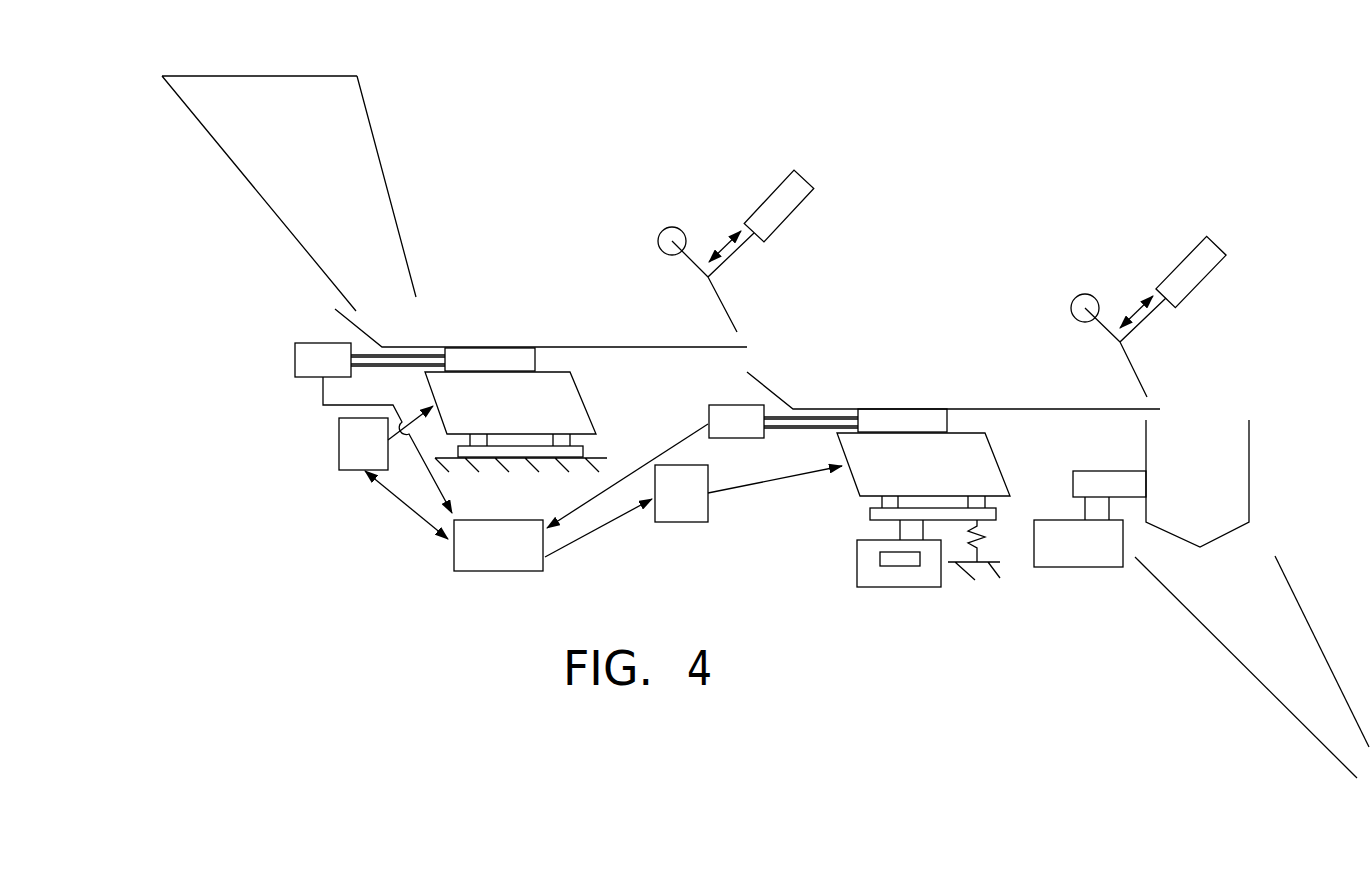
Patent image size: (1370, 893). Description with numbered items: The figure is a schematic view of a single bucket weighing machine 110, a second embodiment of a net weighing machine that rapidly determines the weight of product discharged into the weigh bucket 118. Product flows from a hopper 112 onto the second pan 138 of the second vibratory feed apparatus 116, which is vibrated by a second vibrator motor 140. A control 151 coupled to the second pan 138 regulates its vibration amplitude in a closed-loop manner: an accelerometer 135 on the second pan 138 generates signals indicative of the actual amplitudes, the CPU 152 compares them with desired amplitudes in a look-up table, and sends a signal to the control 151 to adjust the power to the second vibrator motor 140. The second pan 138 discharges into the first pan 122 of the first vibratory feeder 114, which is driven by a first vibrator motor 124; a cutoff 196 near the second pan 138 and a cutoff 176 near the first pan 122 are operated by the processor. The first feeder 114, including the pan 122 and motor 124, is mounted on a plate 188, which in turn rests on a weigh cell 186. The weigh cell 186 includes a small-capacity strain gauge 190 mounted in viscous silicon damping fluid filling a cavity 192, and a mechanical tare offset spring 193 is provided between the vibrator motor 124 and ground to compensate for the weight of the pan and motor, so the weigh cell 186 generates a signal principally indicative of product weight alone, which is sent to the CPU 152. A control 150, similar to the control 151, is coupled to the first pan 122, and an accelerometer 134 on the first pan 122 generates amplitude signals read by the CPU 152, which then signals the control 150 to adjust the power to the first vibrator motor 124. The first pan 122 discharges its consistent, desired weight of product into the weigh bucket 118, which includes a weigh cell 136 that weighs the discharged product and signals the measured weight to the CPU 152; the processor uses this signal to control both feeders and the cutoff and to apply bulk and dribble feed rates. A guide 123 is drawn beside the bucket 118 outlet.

The single bucket weighing machine 110 is at (892, 221).
The hopper 112 is at (372, 128).
The first vibratory feeder 114 is at (902, 367).
The second vibratory feed apparatus 116 is at (528, 311).
The weigh bucket 118 is at (1250, 460).
The first pan 122 is at (1015, 411).
The container guide 123 is at (1298, 595).
The first vibrator motor 124 is at (1000, 458).
The accelerometer 134 is at (722, 404).
The accelerometer 135 is at (310, 343).
The weigh cell 136 is at (1071, 568).
The second pan 138 is at (547, 347).
The second vibrator motor 140 is at (583, 400).
The control 150 is at (680, 523).
The control 151 is at (339, 440).
The CPU 152 is at (500, 572).
The cutoff 176 is at (1180, 258).
The weigh cell 186 is at (857, 560).
The plate 188 is at (868, 512).
The strain gauge 190 is at (913, 567).
The cavity 192 is at (865, 574).
The mechanical tare offset spring 193 is at (985, 575).
The first sensor 196 is at (768, 194).